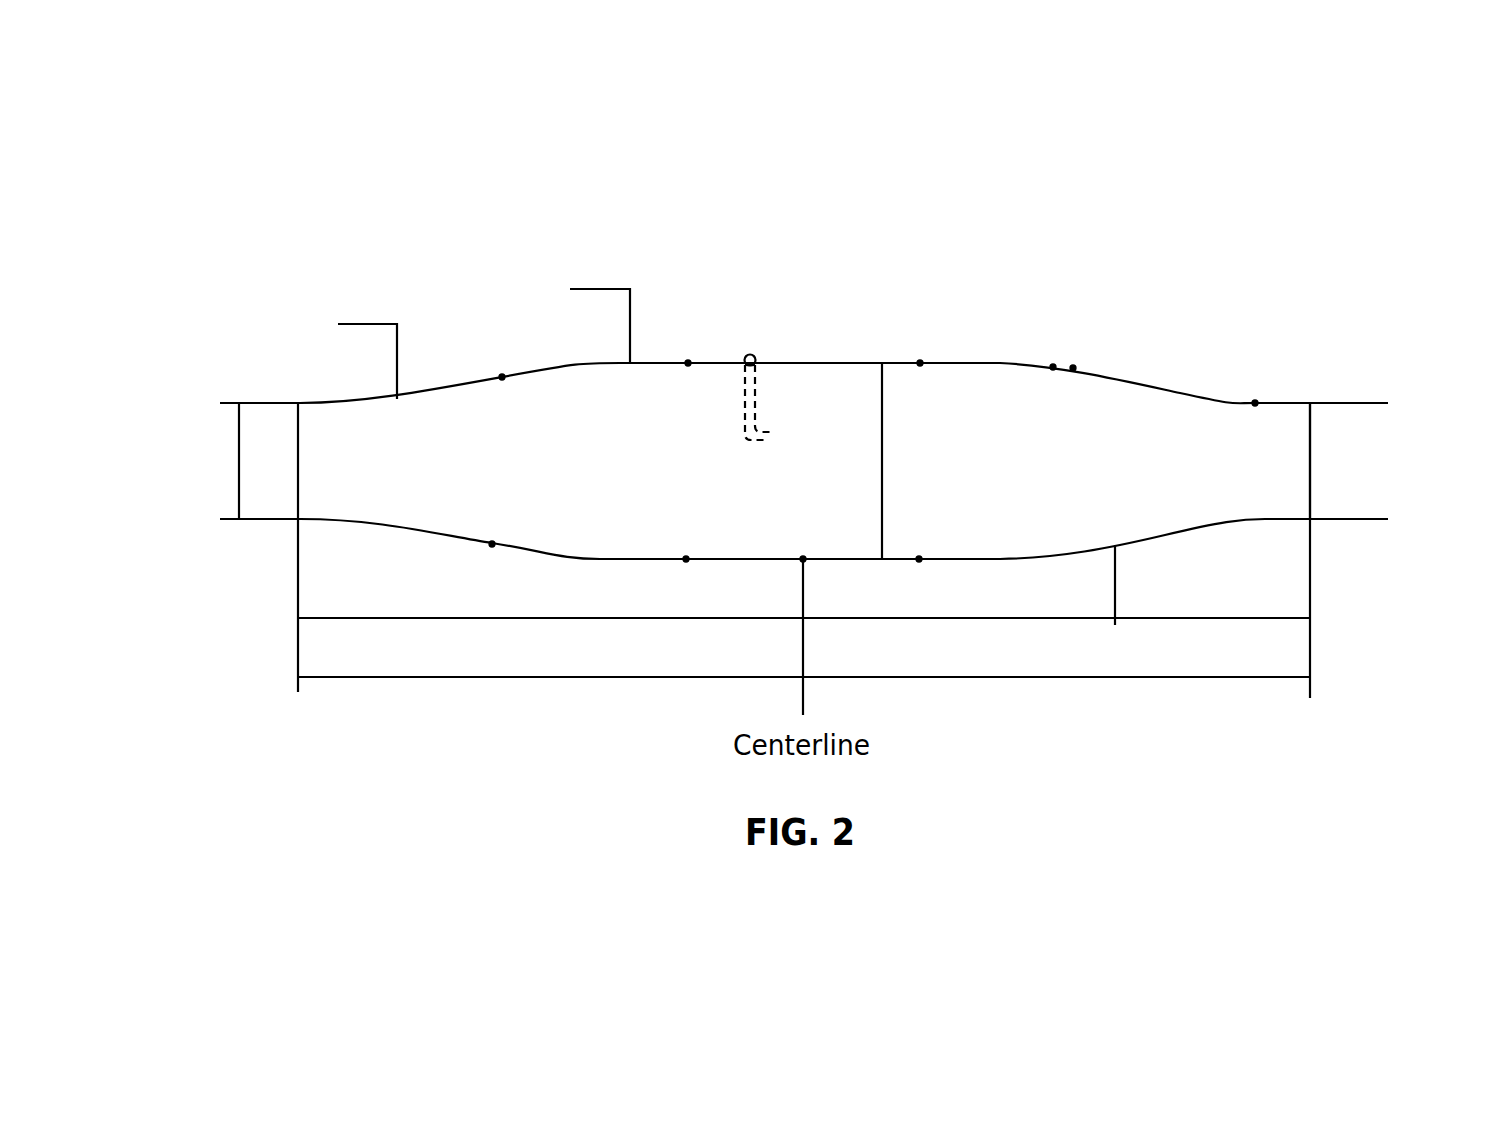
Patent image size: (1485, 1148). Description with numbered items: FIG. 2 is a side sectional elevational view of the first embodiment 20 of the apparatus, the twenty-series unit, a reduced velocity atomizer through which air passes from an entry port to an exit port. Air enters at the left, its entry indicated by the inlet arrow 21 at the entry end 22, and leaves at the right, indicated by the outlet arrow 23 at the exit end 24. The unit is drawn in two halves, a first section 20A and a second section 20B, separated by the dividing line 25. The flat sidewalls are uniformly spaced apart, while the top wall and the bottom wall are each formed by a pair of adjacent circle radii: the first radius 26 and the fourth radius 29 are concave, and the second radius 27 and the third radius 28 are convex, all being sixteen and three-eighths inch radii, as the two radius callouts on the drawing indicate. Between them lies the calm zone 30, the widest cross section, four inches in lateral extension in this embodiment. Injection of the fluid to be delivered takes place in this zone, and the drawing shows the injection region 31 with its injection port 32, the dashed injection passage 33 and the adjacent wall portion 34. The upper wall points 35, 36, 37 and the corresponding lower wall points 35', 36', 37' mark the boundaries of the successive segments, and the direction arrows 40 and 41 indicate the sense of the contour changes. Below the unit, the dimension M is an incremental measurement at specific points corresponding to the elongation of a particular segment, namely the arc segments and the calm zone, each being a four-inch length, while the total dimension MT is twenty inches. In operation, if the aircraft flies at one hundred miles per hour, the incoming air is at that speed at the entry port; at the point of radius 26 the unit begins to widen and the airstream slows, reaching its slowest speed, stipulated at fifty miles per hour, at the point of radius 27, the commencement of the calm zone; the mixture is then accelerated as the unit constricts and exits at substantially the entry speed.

The first embodiment 20 is at (808, 311).
The first duct section 20A is at (564, 456).
The second duct section 20B is at (1016, 456).
The inlet flow direction 21 is at (280, 462).
The inlet end 22 is at (223, 480).
The outlet flow direction 23 is at (1322, 443).
The outlet end 24 is at (1320, 460).
The dividing line between sections 25 is at (882, 450).
The concave radius segment 26 is at (278, 305).
The convex radius segment 27 is at (512, 268).
The convex radius segment 28 is at (1053, 367).
The concave radius segment 29 is at (1255, 403).
The calm zone 30 is at (726, 362).
The slot region 31 is at (738, 413).
The opening / port 32 is at (752, 355).
The dashed passage outline 33 is at (773, 432).
The wall of passage 34 is at (766, 375).
The upper wall point 35 is at (472, 350).
The upper wall point 36 is at (668, 325).
The upper wall point 37 is at (959, 333).
The lower wall point 35' is at (446, 645).
The lower wall point 36' is at (640, 652).
The lower wall point 37' is at (966, 652).
The direction arrow 40 is at (415, 380).
The direction arrow 41 is at (560, 352).
The incremental measurement M is at (277, 618).
The total length measurement MT is at (277, 678).